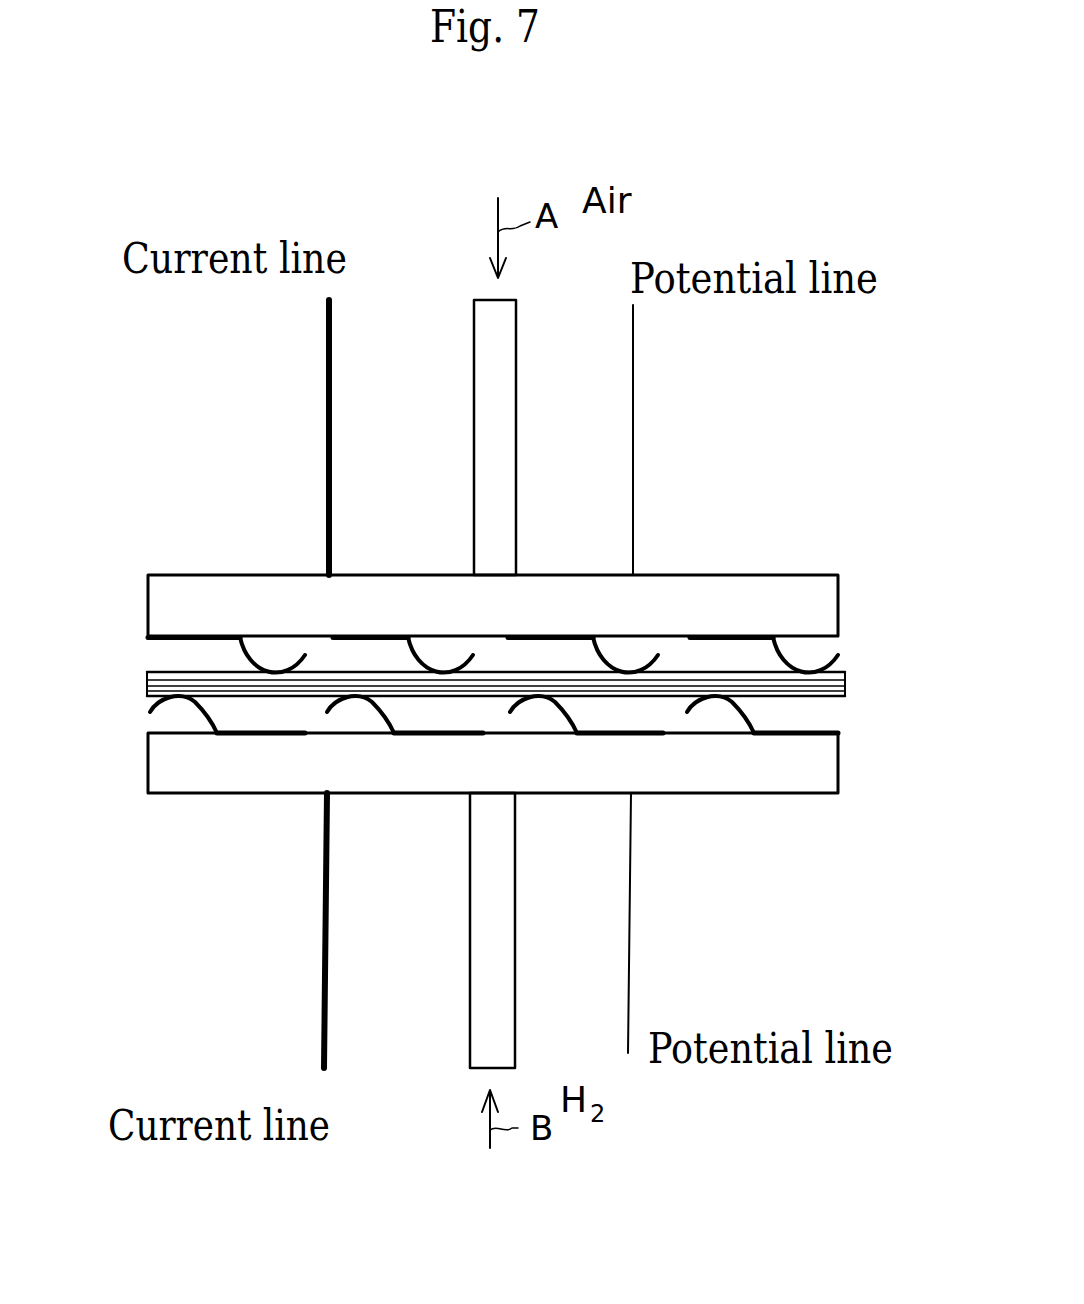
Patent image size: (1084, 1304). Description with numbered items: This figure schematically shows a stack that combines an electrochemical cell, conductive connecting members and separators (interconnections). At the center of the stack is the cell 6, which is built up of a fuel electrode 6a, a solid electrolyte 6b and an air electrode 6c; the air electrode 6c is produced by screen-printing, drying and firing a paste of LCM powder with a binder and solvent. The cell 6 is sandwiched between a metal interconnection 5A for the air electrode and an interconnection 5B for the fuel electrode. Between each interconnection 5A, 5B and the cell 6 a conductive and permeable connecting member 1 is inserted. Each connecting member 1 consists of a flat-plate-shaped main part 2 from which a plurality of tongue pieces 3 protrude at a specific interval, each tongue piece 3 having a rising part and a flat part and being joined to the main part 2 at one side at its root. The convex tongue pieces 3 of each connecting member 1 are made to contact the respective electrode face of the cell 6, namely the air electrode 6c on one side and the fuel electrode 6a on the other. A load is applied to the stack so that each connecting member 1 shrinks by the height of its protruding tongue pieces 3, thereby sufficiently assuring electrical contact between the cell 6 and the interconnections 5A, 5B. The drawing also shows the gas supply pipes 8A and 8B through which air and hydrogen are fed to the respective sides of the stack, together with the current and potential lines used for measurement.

The conductive connecting member 1 is at (85, 782).
The main part 2 is at (186, 637).
The tongue piece 3 is at (276, 667).
The metal interconnection for air electrode 5A is at (790, 577).
The interconnection for fuel electrode 5B is at (713, 785).
The cell 6 is at (492, 668).
The fuel electrode 6a is at (147, 695).
The solid electrolyte 6b is at (147, 681).
The air electrode 6c is at (147, 672).
The air supply pipe 8A is at (513, 452).
The hydrogen supply pipe 8B is at (516, 887).